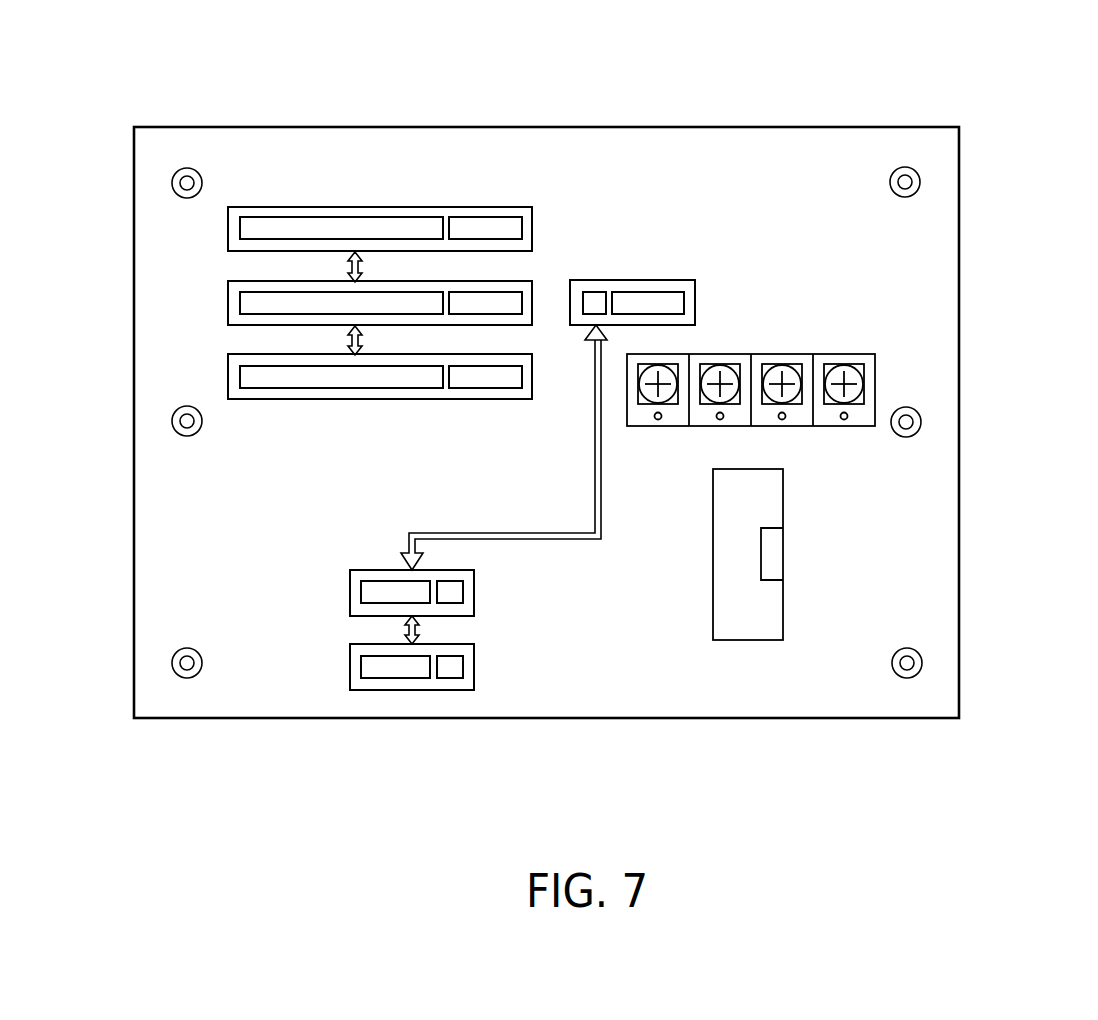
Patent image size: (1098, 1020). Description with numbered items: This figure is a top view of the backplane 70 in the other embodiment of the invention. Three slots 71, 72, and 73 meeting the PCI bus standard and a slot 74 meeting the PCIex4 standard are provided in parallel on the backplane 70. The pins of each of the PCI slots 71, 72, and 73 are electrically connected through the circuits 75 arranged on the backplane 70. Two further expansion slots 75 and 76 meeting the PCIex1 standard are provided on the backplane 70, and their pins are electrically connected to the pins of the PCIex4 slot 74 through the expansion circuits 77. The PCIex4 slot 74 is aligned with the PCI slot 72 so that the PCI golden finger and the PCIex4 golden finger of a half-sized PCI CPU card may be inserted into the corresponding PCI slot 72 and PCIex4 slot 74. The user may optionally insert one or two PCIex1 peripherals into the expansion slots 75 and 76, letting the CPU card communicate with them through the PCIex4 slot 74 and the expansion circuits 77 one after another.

The backplane 70 is at (1002, 142).
The PCI slot 71 is at (237, 234).
The PCI slot 72 is at (237, 304).
The PCI slot 73 is at (237, 382).
The PCIex4 slot 74 is at (672, 280).
The circuits / PCIex1 expansion slot 75 is at (365, 337).
The PCIex1 expansion slot 76 is at (392, 687).
The expansion circuits 77 is at (580, 535).